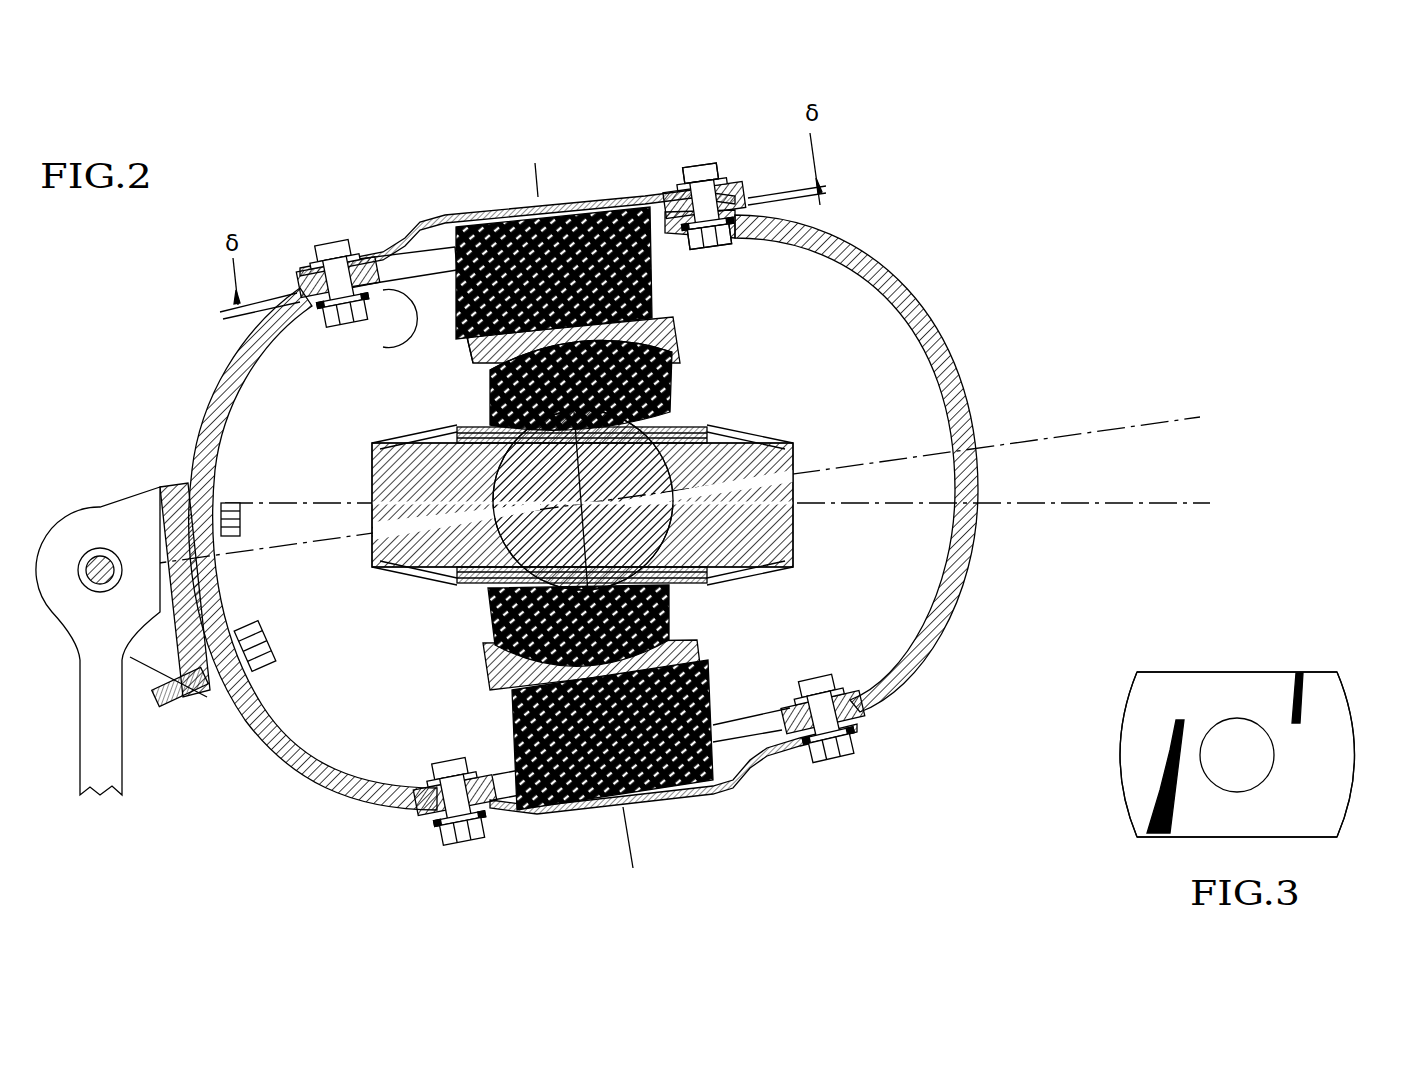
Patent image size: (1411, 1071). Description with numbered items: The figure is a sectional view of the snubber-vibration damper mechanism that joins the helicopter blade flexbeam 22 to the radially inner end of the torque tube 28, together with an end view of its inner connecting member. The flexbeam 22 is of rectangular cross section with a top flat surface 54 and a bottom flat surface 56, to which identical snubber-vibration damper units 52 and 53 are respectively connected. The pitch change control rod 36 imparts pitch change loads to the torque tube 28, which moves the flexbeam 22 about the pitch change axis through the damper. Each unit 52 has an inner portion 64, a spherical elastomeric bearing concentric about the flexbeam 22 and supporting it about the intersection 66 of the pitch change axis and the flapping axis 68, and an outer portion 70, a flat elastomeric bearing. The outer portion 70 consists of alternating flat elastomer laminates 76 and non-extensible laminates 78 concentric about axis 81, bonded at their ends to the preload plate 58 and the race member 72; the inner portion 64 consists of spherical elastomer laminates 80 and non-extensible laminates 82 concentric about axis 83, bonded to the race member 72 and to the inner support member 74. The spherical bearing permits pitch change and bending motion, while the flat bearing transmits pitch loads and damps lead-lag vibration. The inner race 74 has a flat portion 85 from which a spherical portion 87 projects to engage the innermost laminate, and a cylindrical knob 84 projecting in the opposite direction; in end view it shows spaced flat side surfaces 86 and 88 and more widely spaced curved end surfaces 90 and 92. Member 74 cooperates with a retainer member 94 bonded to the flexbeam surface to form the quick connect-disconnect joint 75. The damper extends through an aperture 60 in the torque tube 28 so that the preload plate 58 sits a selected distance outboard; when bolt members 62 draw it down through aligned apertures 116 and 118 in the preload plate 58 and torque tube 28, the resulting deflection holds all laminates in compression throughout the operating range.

In FIG. 2, the flexbeam 22 is at (793, 538).
In FIG. 2, the torque tube 28 is at (233, 345).
In FIG. 2, the pitch change control rod 36 is at (110, 770).
In FIG. 2, the snubber-vibration damper unit 52 is at (700, 328).
In FIG. 2, the snubber-vibration damper unit 53 is at (720, 655).
In FIG. 2, the top flat surface 54 is at (393, 440).
In FIG. 2, the bottom flat surface 56 is at (717, 578).
In FIG. 2, the preload plate 58 is at (437, 220).
In FIG. 2, the aperture 60 is at (405, 338).
In FIG. 2, the bolt member 62 is at (320, 262).
In FIG. 2, the inner portion 64 is at (680, 382).
In FIG. 2, the intersection 66 is at (582, 515).
In FIG. 2, the flapping axis 68 is at (1048, 503).
In FIG. 2, the outer portion 70 is at (650, 290).
In FIG. 2, the race member 72 is at (468, 360).
In FIG. 2, the inner support member 74 is at (583, 500).
In FIG. 3, the inner support member 74 is at (1133, 727).
In FIG. 2, the quick connect-disconnect joint 75 is at (559, 502).
In FIG. 2, the elastomer laminate 76 is at (463, 338).
In FIG. 2, the non-extensible material laminate 78 is at (462, 298).
In FIG. 2, the elastomeric laminate 80 is at (512, 414).
In FIG. 2, the axis 81 is at (533, 192).
In FIG. 2, the non-extensible material laminate 82 is at (490, 375).
In FIG. 2, the axis 83 is at (582, 813).
In FIG. 2, the cylindrical knob 84 is at (582, 505).
In FIG. 3, the cylindrical knob 84 is at (1273, 770).
In FIG. 2, the flat portion 85 is at (665, 430).
In FIG. 3, the flat portion 85 is at (1337, 810).
In FIG. 3, the flat side surface 86 is at (1217, 672).
In FIG. 2, the spherical portion 87 is at (583, 500).
In FIG. 3, the flat side surface 88 is at (1183, 837).
In FIG. 3, the curved end surface 90 is at (1103, 750).
In FIG. 3, the curved end surface 92 is at (1370, 733).
In FIG. 2, the retainer member 94 is at (456, 498).
In FIG. 2, the aperture 116 is at (690, 167).
In FIG. 2, the aperture 118 is at (707, 247).